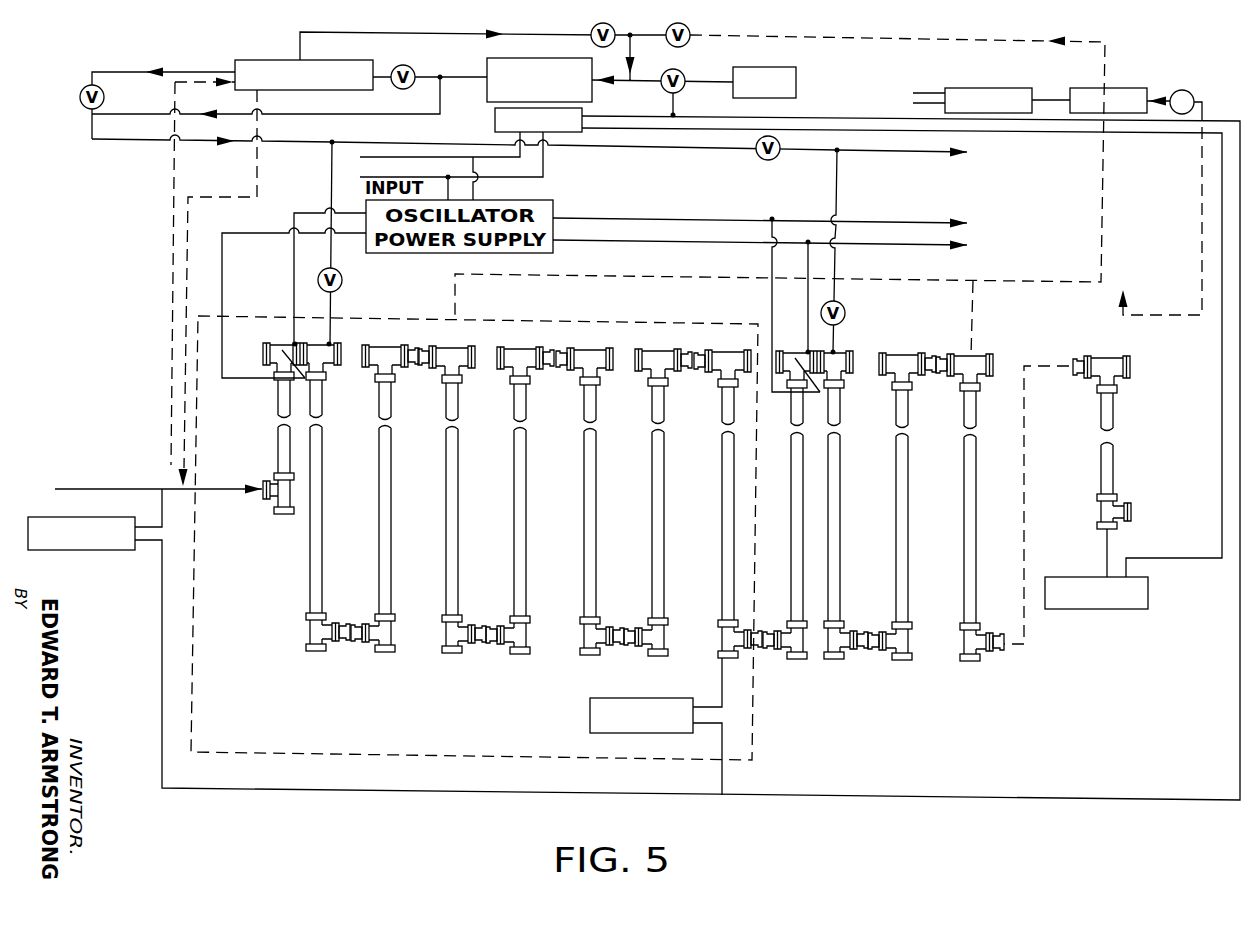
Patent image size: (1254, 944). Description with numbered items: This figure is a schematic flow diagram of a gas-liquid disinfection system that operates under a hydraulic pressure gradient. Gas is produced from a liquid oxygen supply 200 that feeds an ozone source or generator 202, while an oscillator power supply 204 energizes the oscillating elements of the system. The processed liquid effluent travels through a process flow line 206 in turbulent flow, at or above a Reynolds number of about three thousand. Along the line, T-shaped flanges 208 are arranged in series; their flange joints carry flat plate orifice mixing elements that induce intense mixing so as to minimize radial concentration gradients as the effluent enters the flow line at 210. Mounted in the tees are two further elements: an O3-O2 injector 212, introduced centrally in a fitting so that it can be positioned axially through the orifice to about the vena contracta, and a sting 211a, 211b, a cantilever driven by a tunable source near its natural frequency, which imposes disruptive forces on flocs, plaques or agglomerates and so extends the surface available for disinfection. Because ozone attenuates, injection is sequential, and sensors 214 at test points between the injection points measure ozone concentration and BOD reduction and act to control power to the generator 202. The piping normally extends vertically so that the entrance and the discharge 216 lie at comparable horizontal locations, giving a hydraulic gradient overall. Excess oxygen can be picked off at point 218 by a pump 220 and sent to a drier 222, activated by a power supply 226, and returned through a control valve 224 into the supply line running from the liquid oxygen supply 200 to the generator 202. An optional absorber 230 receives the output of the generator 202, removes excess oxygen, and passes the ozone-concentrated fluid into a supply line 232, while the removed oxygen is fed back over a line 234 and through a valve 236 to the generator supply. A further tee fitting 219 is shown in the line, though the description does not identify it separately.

The liquid oxygen supply 200 is at (796, 82).
The ozone generator 202 is at (567, 24).
The oscillator power supply 204 is at (495, 116).
The process flow line 206 is at (246, 355).
The T-shaped flanges 208 is at (322, 388).
The effluent entry point 210 is at (340, 340).
The sting 211a is at (806, 350).
The sting 211b is at (792, 380).
The O3-O2 injector 212 is at (333, 308).
The sensors 214 is at (127, 552).
The discharge 216 is at (1131, 510).
The excess oxygen pick-off point 218 is at (1105, 358).
The tee fitting 219 is at (455, 346).
The pump 220 is at (1192, 92).
The drier 222 is at (1122, 88).
The control valve 224 is at (684, 24).
The power supply 226 is at (996, 88).
The absorber 230 is at (262, 60).
The supply line 232 is at (200, 140).
The line 234 is at (400, 34).
The valve 236 is at (606, 24).